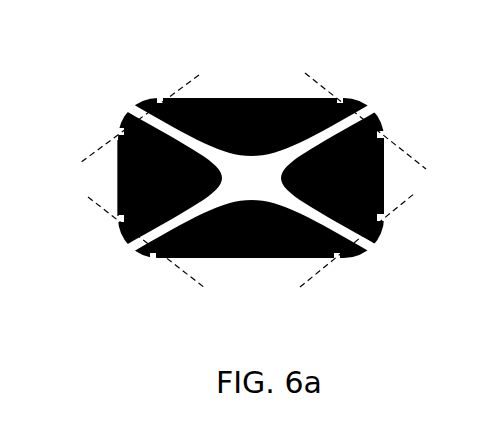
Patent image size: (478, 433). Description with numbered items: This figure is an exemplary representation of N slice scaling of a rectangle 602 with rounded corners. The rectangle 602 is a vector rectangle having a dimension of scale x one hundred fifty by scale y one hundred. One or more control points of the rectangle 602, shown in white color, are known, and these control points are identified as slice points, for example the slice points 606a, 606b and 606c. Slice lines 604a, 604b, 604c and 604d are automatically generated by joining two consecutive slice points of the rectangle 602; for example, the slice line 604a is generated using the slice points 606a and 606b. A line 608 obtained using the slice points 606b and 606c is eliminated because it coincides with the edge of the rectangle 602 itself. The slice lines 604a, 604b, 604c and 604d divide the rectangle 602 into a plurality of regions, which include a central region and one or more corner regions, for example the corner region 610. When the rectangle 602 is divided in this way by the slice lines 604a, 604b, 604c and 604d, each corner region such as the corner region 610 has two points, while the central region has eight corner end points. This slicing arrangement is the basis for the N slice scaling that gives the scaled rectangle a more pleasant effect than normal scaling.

The rectangle 602 is at (265, 98).
The slice line 604a is at (203, 75).
The slice line 604b is at (317, 64).
The slice line 604c is at (318, 272).
The slice line 604d is at (203, 285).
The slice point 606a is at (163, 98).
The slice point 606b is at (120, 132).
The slice point 606c is at (122, 218).
The line 608 is at (118, 168).
The corner region 610 is at (125, 128).